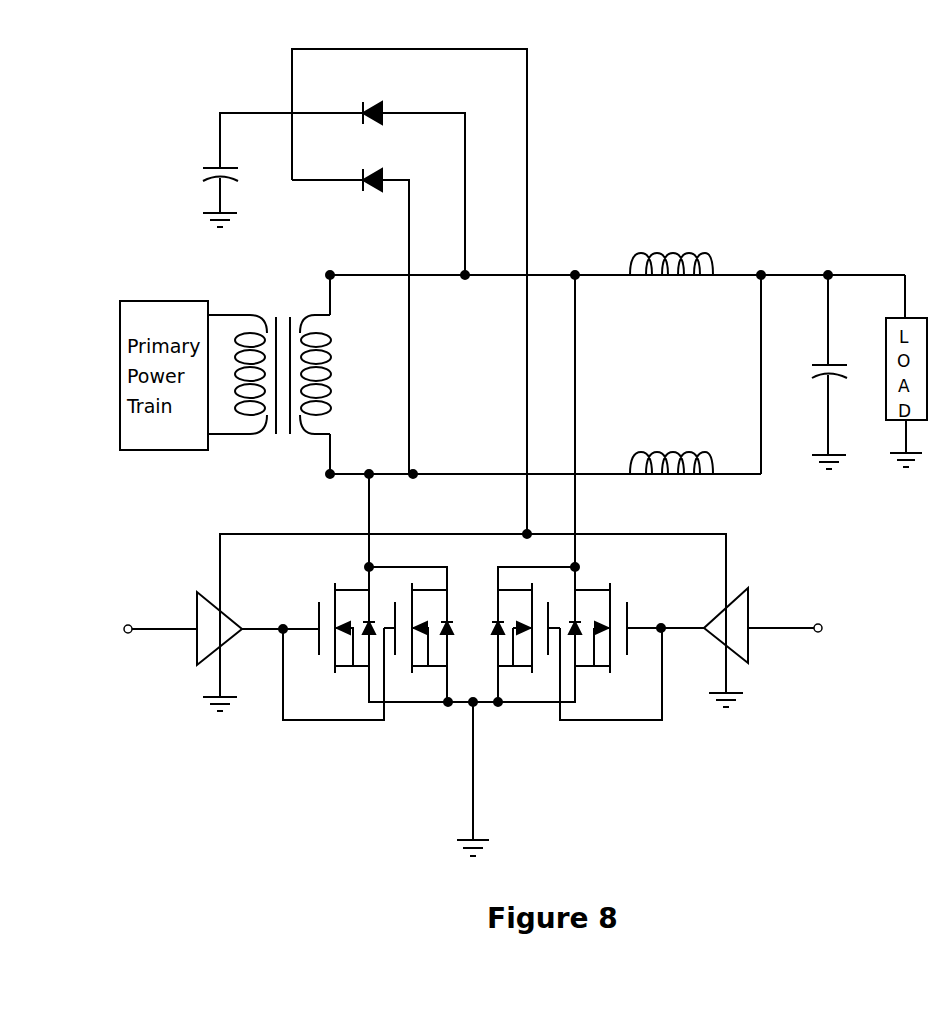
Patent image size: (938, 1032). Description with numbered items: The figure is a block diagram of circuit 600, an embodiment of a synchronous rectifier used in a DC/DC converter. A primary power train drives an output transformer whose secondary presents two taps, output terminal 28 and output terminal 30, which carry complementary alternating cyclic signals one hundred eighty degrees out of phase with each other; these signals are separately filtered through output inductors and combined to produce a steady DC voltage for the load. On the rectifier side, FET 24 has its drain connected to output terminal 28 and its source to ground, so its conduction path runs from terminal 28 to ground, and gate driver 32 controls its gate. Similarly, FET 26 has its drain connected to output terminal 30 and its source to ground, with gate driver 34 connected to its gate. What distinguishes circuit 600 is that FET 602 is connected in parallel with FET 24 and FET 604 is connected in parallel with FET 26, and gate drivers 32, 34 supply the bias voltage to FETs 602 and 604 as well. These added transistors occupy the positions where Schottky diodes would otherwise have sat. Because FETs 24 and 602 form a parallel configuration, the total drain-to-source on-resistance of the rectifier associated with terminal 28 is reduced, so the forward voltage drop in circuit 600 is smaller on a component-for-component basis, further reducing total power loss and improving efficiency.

The output terminal 30 is at (328, 276).
The output terminal 28 is at (327, 478).
The circuit 600 is at (655, 200).
The gate driver 32 is at (178, 664).
The gate driver 34 is at (773, 657).
The FET 24 is at (323, 668).
The FET 602 is at (417, 688).
The FET 604 is at (528, 688).
The FET 26 is at (618, 668).